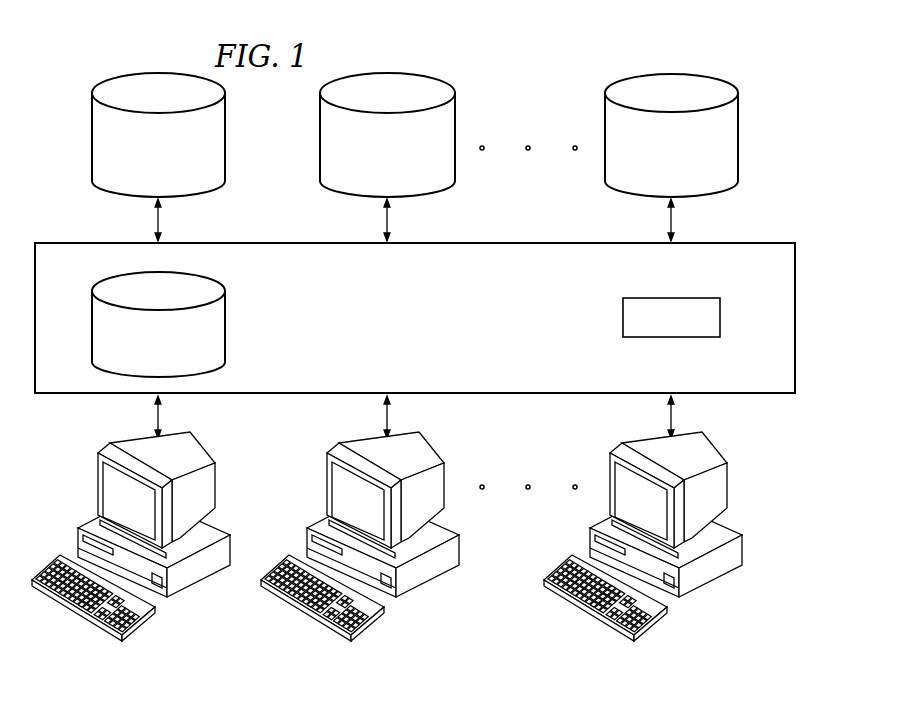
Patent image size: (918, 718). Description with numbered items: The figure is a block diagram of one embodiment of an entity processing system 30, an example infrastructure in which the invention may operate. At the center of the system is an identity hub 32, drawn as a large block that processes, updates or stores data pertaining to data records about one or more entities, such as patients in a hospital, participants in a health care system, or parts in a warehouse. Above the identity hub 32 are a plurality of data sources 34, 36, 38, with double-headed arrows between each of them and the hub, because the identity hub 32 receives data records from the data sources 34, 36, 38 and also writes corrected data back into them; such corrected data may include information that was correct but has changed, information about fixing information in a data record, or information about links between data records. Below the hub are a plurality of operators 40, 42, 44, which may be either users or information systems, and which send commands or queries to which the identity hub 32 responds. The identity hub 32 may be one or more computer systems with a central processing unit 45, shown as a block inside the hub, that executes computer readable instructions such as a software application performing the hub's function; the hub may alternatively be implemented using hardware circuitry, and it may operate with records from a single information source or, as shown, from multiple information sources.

The entity processing system 30 is at (606, 55).
The identity hub 32 is at (66, 240).
The data source 34 is at (92, 148).
The data source 36 is at (320, 148).
The data source 38 is at (738, 143).
The operator 40 is at (98, 486).
The operator 42 is at (327, 486).
The operator 44 is at (727, 485).
The central processing unit 45 is at (720, 316).